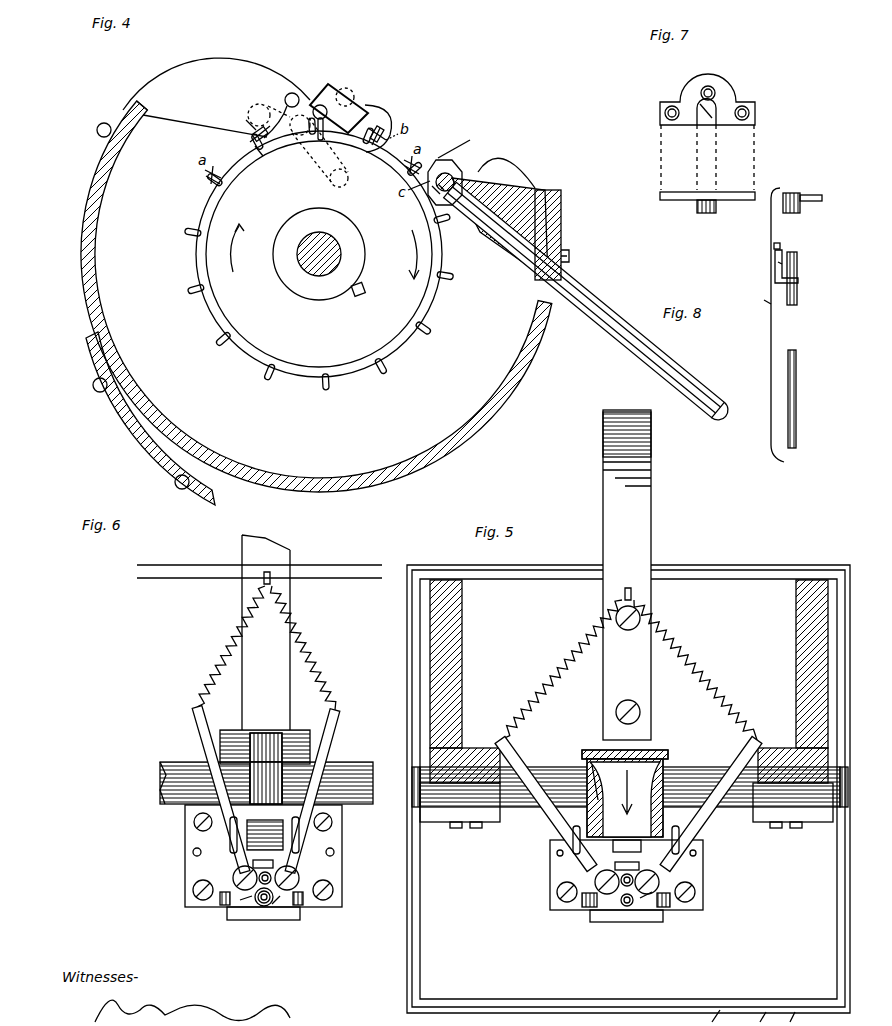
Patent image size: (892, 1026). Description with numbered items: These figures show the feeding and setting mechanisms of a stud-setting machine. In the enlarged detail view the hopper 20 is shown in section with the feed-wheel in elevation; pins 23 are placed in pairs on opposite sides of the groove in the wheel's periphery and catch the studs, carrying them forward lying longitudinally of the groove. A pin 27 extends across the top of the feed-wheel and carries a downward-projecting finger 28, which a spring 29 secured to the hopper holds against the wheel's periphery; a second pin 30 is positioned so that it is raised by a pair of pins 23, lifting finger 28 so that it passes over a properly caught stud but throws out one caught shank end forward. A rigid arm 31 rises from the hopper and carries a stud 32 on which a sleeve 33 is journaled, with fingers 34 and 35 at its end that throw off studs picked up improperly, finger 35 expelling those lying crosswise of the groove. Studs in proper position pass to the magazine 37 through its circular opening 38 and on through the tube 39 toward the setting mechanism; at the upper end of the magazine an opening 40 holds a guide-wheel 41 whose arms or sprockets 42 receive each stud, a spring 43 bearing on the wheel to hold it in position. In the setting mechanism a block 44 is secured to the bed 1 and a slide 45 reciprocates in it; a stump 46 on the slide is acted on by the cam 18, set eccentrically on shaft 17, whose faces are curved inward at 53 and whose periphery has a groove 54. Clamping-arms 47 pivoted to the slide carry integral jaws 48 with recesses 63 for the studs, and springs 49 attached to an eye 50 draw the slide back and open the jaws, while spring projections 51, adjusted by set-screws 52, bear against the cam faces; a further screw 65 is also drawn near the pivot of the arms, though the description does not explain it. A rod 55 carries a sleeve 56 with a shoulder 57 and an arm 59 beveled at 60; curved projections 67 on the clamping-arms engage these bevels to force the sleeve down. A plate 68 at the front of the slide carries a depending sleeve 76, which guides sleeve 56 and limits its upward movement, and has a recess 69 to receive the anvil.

In FIG. 5, the bed 1 is at (628, 789).
In FIG. 6, the shaft 17 is at (266, 775).
In FIG. 5, the shaft 17 is at (700, 778).
In FIG. 5, the cam 18 is at (627, 621).
In FIG. 4, the hopper 20 is at (316, 303).
In FIG. 4, the pins 23 is at (192, 228).
In FIG. 4, the pin 27 is at (304, 74).
In FIG. 4, the finger 28 is at (262, 128).
In FIG. 4, the spring 29 is at (182, 74).
In FIG. 4, the pin 30 is at (305, 117).
In FIG. 4, the rigid arm 31 is at (325, 108).
In FIG. 4, the stud 32 is at (348, 92).
In FIG. 4, the sleeve 33 is at (360, 100).
In FIG. 4, the finger 34 is at (392, 126).
In FIG. 4, the finger 35 is at (378, 126).
In FIG. 4, the magazine 37 is at (534, 190).
In FIG. 4, the circular opening 38 is at (479, 228).
In FIG. 4, the tube 39 is at (588, 313).
In FIG. 4, the opening 40 is at (506, 173).
In FIG. 4, the guide-wheel 41 is at (452, 176).
In FIG. 4, the arms or sprockets 42 is at (433, 182).
In FIG. 4, the spring 43 is at (445, 170).
In FIG. 6, the block 44 is at (333, 865).
In FIG. 5, the block 44 is at (702, 870).
In FIG. 6, the slide 45 is at (290, 920).
In FIG. 5, the slide 45 is at (620, 922).
In FIG. 5, the stump 46 is at (620, 847).
In FIG. 6, the clamping-arms 47 is at (335, 740).
In FIG. 5, the clamping-arms 47 is at (708, 802).
In FIG. 6, the jaws 48 is at (278, 891).
In FIG. 5, the jaws 48 is at (637, 891).
In FIG. 6, the springs 49 is at (333, 682).
In FIG. 5, the springs 49 is at (628, 670).
In FIG. 6, the eye 50 is at (278, 572).
In FIG. 5, the eye 50 is at (639, 583).
In FIG. 5, the spring projections 51 is at (573, 836).
In FIG. 6, the set-screws 52 is at (332, 824).
In FIG. 5, the set-screws 52 is at (557, 853).
In FIG. 5, the curves 53 is at (596, 800).
In FIG. 6, the groove 54 is at (265, 766).
In FIG. 5, the groove 54 is at (625, 788).
In FIG. 8, the rod 55 is at (804, 399).
In FIG. 8, the sleeve 56 is at (797, 262).
In FIG. 8, the shoulder 57 is at (798, 281).
In FIG. 6, the shoulder 57 is at (196, 820).
In FIG. 8, the arm 59 is at (775, 265).
In FIG. 8, the bevels 60 is at (789, 243).
In FIG. 6, the recesses 63 is at (264, 906).
In FIG. 5, the recesses 63 is at (641, 902).
In FIG. 6, the screw 65 is at (256, 906).
In FIG. 5, the curved projections 67 is at (575, 870).
In FIG. 7, the plate 68 is at (707, 137).
In FIG. 7, the recess 69 is at (709, 114).
In FIG. 6, the recess 69 is at (268, 906).
In FIG. 7, the sleeve 76 is at (707, 206).
In FIG. 8, the sleeve 76 is at (800, 206).